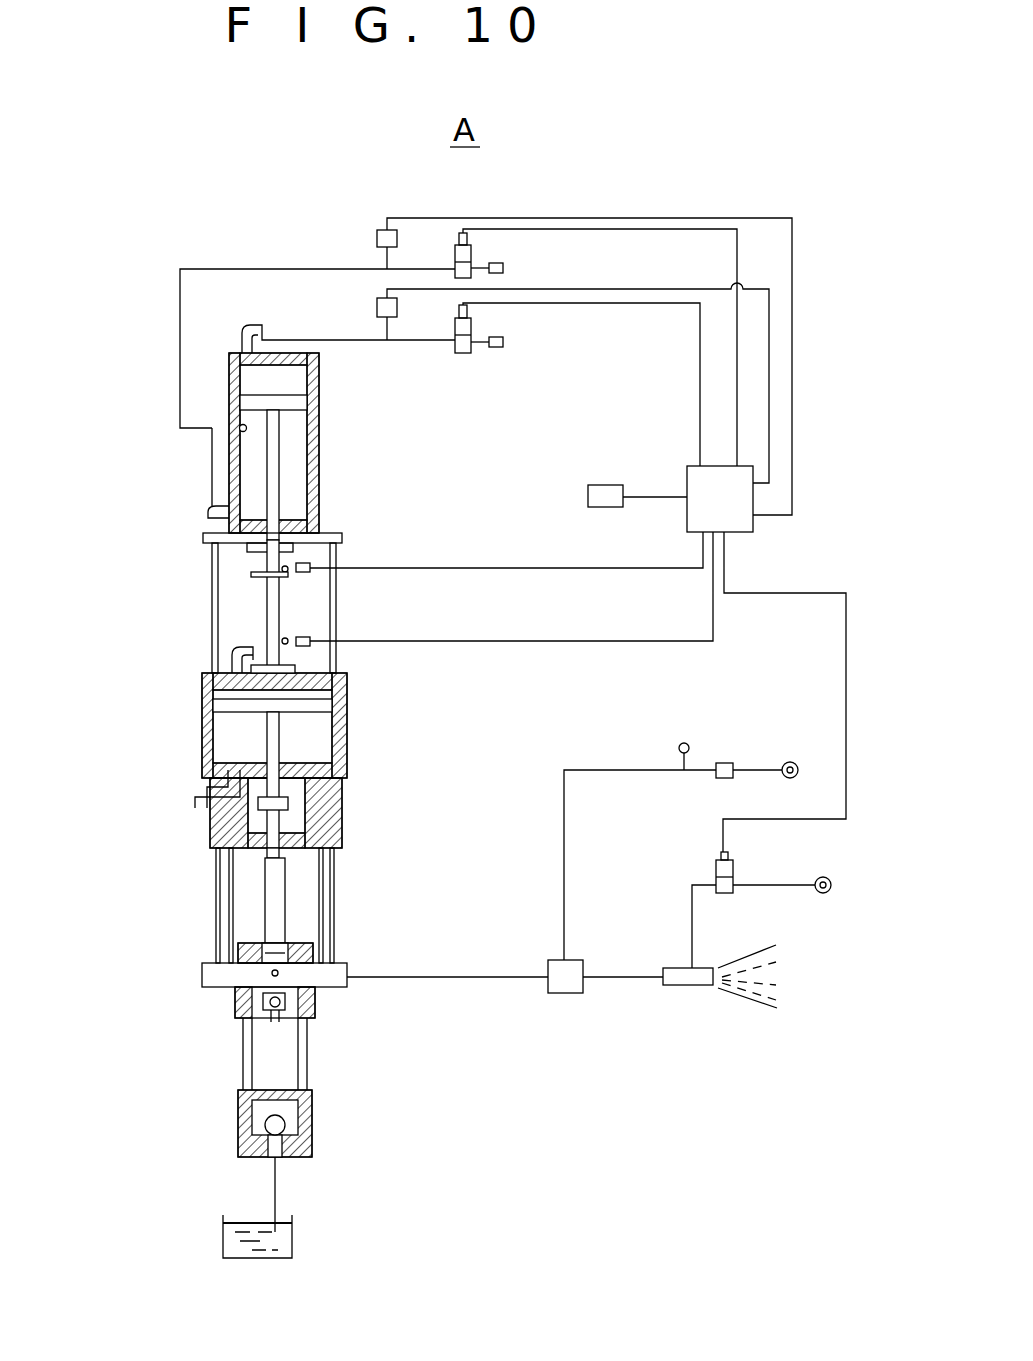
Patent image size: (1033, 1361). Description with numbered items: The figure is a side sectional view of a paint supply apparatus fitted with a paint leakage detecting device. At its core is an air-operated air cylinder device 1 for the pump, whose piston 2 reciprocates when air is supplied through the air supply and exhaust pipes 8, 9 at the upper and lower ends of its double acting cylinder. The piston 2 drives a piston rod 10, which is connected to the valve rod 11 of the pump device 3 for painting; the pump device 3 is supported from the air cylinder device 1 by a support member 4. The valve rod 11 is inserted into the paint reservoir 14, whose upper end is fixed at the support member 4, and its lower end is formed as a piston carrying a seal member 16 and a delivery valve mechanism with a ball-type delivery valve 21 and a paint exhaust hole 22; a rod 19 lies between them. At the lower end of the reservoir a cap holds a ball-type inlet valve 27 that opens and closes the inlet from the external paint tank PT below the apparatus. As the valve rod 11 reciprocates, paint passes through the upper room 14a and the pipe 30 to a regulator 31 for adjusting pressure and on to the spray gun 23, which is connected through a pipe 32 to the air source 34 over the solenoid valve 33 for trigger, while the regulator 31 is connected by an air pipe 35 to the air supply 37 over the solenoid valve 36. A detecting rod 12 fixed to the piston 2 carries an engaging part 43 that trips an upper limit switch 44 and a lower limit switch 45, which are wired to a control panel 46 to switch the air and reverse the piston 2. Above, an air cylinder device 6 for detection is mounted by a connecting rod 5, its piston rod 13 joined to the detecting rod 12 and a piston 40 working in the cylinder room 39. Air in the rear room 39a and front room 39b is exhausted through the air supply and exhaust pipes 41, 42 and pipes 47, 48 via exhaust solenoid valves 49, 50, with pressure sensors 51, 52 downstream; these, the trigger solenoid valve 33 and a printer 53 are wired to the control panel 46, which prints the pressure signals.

The air cylinder device for pump 1 is at (190, 723).
The piston 2 is at (228, 697).
The pump device for painting 3 is at (222, 1060).
The support member 4 is at (215, 975).
The connecting rod 5 is at (212, 570).
The air cylinder device for detection 6 is at (332, 452).
The air supply and exhaust pipe 8 is at (240, 655).
The air supply and exhaust pipe 9 is at (200, 797).
The piston rod 10 is at (275, 740).
The valve rod 11 is at (280, 870).
The detecting rod 12 is at (270, 607).
The piston rod 13 is at (278, 490).
The paint reservoir 14 is at (290, 1072).
The upper room 14a is at (318, 950).
The seal member 16 is at (240, 1005).
The pump piston rod 19 is at (278, 1020).
The delivery valve 21 is at (283, 1003).
The paint exhaust hole 22 is at (243, 950).
The spray gun 23 is at (690, 985).
The inlet valve 27 is at (290, 1125).
The pipe 30 is at (495, 977).
The regulator 31 is at (562, 993).
The air pipe 32 is at (692, 930).
The solenoid valve for trigger 33 is at (735, 867).
The air source 34 is at (825, 893).
The pipe 35 is at (565, 858).
The solenoid valve for adjusting pressure 36 is at (722, 763).
The air supply for adjusting pressure 37 is at (790, 762).
The cylinder room 39 is at (238, 427).
The rear room 39a is at (250, 380).
The front room 39b is at (252, 475).
The piston 40 is at (300, 403).
The air supply and exhaust pipe 41 is at (240, 333).
The air supply and exhaust pipe 42 is at (213, 515).
The engaging part 43 is at (288, 577).
The upper limit switch 44 is at (310, 565).
The lower limit switch 45 is at (310, 645).
The control panel 46 is at (739, 523).
The pipe 47 is at (333, 340).
The pipe 48 is at (318, 269).
The exhaust solenoid valve 49 is at (468, 352).
The exhaust solenoid valve 50 is at (472, 255).
The pressure sensor 51 is at (398, 312).
The pressure sensor 52 is at (377, 234).
The printer 53 is at (612, 497).
The paint tank PT is at (223, 1240).